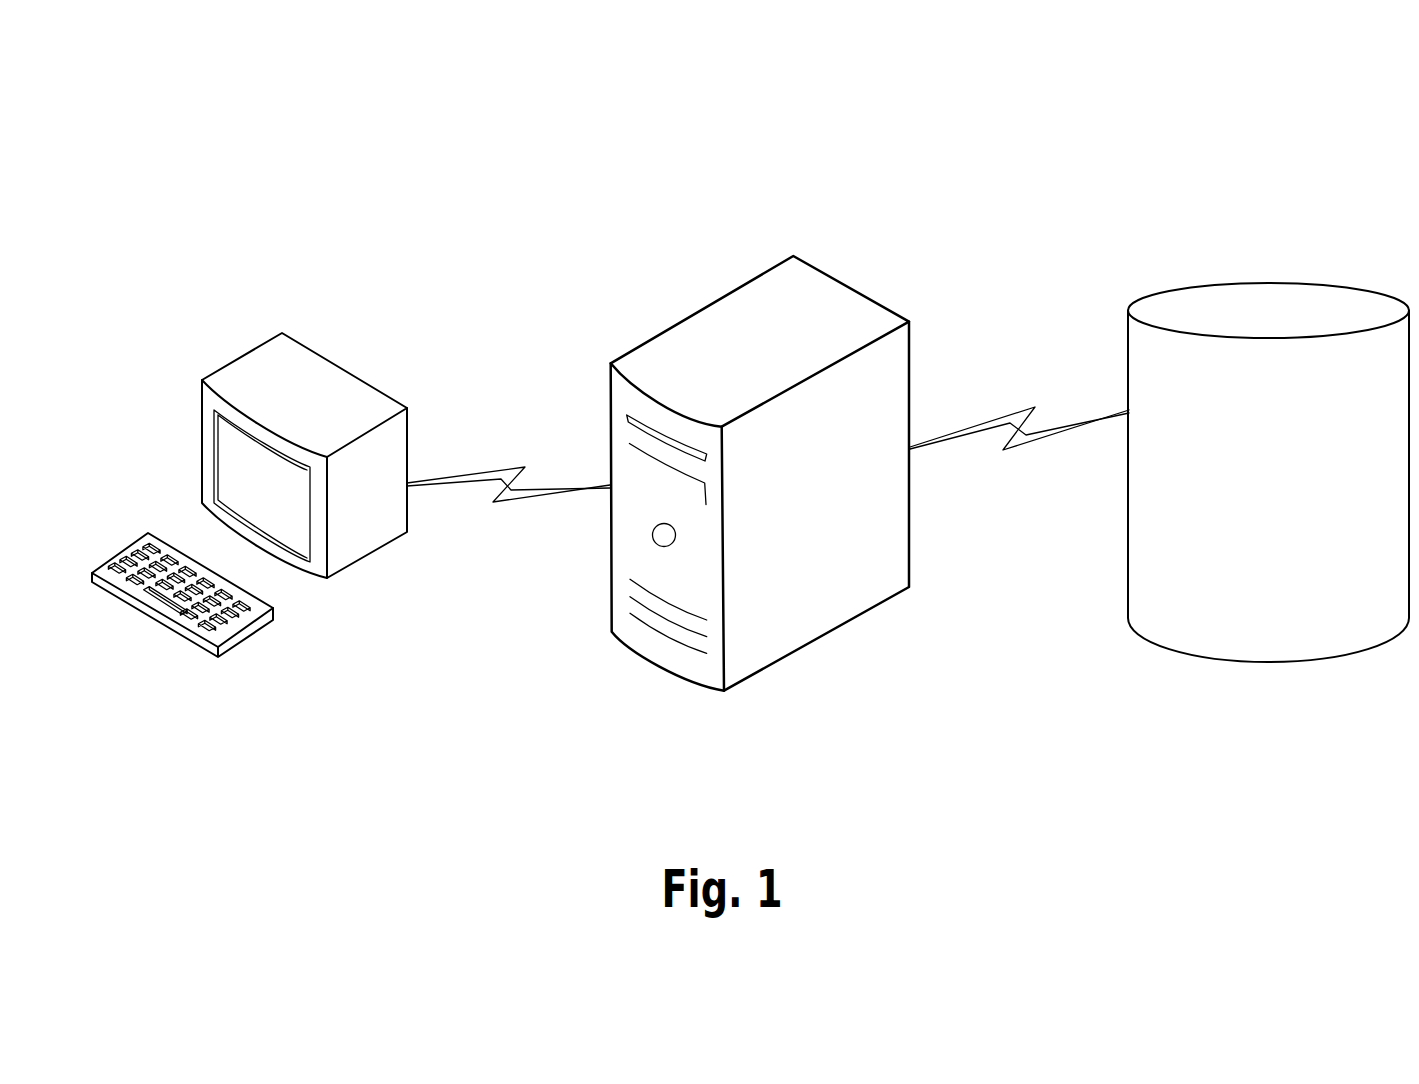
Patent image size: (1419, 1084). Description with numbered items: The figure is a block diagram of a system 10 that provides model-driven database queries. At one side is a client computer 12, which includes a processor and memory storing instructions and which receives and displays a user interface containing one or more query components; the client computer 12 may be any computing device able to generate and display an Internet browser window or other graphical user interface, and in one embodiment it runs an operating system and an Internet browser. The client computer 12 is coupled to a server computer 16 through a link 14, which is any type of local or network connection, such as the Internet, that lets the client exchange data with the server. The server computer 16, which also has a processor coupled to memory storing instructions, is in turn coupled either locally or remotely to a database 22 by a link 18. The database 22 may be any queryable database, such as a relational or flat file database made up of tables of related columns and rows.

The system 10 is at (462, 200).
The client computer 12 is at (353, 565).
The link 14 is at (509, 494).
The server computer 16 is at (802, 622).
The link 18 is at (1018, 423).
The database 22 is at (1282, 634).